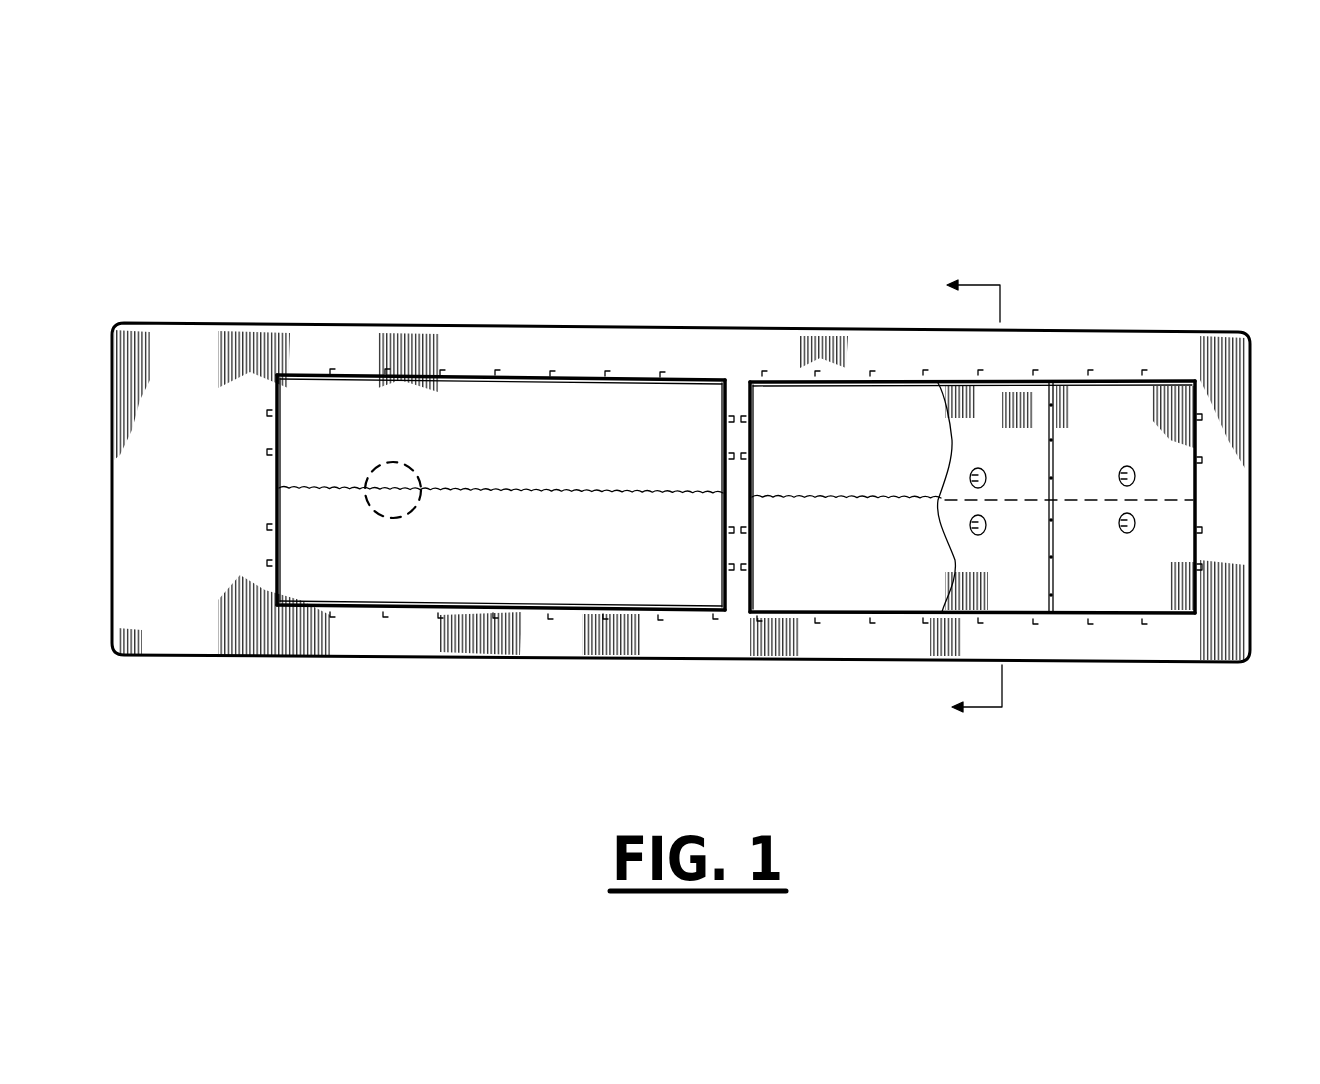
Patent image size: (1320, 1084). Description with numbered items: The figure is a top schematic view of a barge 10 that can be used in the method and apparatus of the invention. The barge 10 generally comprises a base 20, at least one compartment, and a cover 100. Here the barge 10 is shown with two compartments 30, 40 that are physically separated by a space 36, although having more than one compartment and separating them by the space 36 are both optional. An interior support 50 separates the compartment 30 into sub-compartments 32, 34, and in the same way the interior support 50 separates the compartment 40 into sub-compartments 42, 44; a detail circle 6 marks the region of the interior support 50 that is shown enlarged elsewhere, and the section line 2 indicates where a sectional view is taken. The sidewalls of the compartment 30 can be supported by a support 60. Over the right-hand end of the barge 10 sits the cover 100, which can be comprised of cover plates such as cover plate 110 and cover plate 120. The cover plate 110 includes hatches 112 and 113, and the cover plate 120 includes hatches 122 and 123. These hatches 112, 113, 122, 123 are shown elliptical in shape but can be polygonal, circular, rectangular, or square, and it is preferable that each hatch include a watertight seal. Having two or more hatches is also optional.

The barge 10 is at (832, 156).
The base 20 is at (1093, 345).
The compartment 30 is at (795, 405).
The sub-compartment 32 is at (858, 578).
The sub-compartment 34 is at (848, 413).
The space 36 is at (731, 632).
The compartment 40 is at (445, 580).
The sub-compartment 42 is at (577, 565).
The sub-compartment 44 is at (398, 405).
The interior support 50 is at (572, 490).
The support 60 is at (732, 420).
The cover 100 is at (1118, 405).
The cover plate 110 is at (1178, 460).
The hatch 112 is at (1126, 534).
The hatch 113 is at (1127, 466).
The cover plate 120 is at (1026, 613).
The hatch 122 is at (982, 536).
The hatch 123 is at (980, 468).
The detail circle for FIG. 6 is at (420, 473).
The section line 2- 2 is at (962, 500).